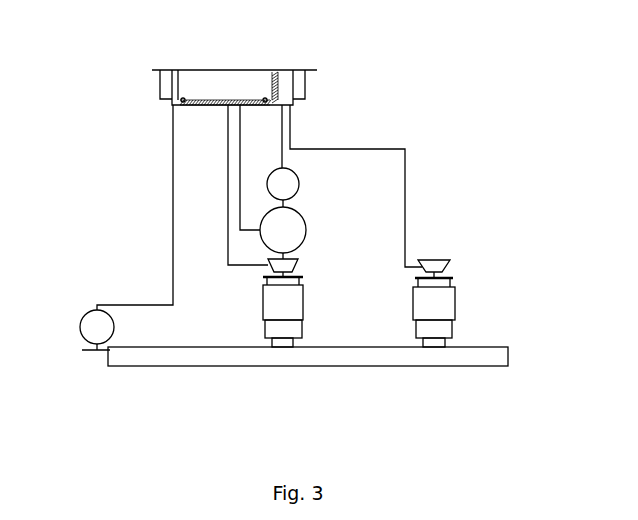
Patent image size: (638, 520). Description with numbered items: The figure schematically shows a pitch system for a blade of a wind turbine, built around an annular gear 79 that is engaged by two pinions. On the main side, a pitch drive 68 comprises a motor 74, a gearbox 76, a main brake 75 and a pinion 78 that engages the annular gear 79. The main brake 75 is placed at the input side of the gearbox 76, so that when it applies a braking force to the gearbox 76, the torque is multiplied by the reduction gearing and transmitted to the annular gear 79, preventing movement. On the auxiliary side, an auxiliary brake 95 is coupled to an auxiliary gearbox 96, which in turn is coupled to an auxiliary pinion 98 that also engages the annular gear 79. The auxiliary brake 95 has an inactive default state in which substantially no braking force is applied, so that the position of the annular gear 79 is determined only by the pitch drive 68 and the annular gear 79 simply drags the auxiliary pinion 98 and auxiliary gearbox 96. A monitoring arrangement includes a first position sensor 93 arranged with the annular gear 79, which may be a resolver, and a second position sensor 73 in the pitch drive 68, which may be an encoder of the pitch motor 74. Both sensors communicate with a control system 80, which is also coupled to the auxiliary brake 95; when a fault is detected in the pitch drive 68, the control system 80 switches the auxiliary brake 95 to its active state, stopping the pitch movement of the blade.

The pitch drive 68 is at (247, 280).
The second position sensor 73 is at (298, 182).
The motor 74 is at (306, 227).
The main brake 75 is at (298, 266).
The gearbox 76 is at (303, 305).
The pinion 78 is at (283, 347).
The annular gear 79 is at (162, 350).
The control system 80 is at (223, 70).
The first position sensor 93 is at (80, 322).
The auxiliary brake 95 is at (431, 258).
The auxiliary gearbox 96 is at (455, 305).
The auxiliary pinion 98 is at (433, 347).